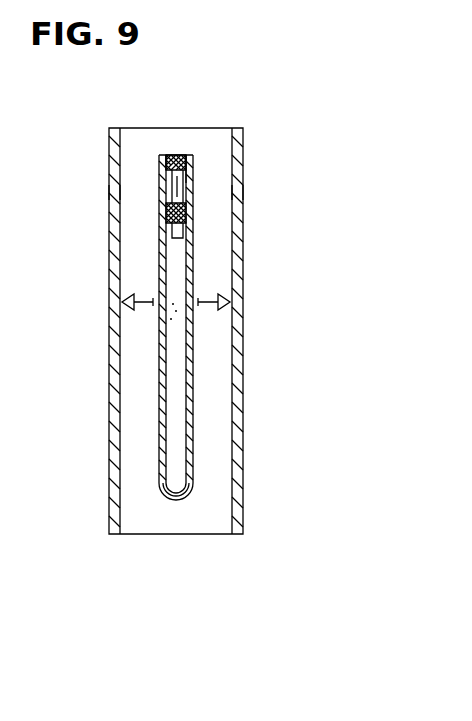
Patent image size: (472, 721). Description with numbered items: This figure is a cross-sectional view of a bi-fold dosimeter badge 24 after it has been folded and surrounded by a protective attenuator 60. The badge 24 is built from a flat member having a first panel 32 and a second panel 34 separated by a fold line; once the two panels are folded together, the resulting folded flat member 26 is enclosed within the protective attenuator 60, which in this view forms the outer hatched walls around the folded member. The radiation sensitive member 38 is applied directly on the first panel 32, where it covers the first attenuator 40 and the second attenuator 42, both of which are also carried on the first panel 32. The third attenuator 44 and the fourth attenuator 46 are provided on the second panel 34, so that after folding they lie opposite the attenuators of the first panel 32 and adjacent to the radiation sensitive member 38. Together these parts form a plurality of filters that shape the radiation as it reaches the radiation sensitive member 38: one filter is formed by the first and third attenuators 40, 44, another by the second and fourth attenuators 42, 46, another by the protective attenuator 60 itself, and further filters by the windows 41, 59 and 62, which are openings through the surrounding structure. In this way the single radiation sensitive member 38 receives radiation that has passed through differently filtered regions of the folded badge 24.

The badge 24 is at (253, 111).
The folded flat member 26 is at (180, 504).
The first panel 32 is at (197, 268).
The second panel 34 is at (158, 277).
The radiation sensitive member 38 is at (193, 163).
The first attenuator 40 is at (177, 158).
The window 41 is at (160, 190).
The second attenuator 42 is at (184, 208).
The third attenuator 44 is at (169, 158).
The fourth attenuator 46 is at (165, 215).
The window 59 is at (193, 183).
The protective attenuator 60 is at (112, 480).
The window 62 is at (118, 190).